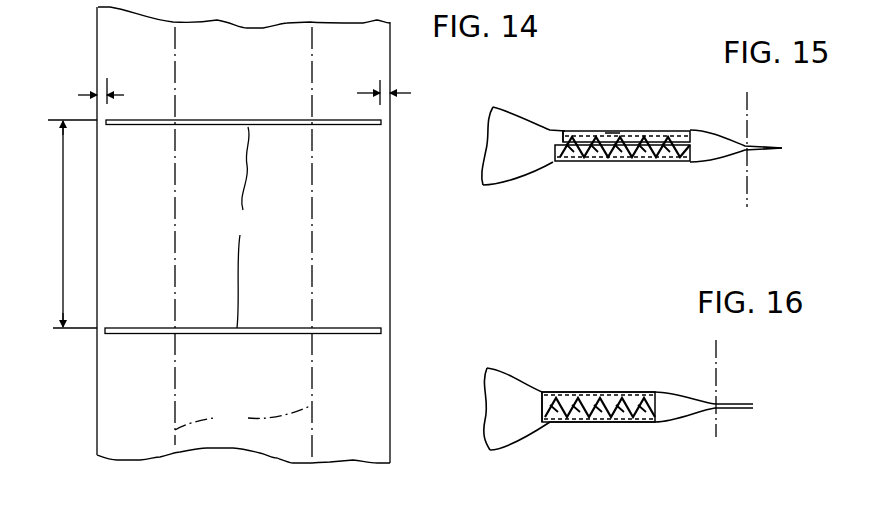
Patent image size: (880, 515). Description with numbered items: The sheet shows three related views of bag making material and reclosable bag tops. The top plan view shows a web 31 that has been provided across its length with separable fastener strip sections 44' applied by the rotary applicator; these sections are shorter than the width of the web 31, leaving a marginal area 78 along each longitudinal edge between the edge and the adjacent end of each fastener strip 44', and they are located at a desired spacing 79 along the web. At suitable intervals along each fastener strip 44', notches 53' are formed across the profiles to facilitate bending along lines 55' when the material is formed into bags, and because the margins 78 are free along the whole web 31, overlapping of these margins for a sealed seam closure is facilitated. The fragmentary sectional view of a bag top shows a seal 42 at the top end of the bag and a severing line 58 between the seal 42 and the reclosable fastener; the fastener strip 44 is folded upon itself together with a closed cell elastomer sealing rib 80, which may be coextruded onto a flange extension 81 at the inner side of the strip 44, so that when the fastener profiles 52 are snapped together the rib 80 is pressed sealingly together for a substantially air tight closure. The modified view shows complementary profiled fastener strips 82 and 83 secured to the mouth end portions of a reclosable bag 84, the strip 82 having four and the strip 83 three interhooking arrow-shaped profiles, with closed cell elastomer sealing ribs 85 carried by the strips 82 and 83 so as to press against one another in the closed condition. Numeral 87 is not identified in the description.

In FIG. 14, the web 31 is at (388, 52).
In FIG. 14, the marginal area 78 is at (100, 97).
In FIG. 14, the spacing 79 is at (63, 226).
In FIG. 14, the notches 53' is at (243, 229).
In FIG. 14, the fastener strip sections 44' is at (249, 227).
In FIG. 14, the bending lines 55' is at (243, 418).
In FIG. 15, the seal 42 is at (760, 148).
In FIG. 15, the fastener strip 44 is at (643, 148).
In FIG. 15, the fastener profiles 52 is at (681, 131).
In FIG. 15, the closed cell elastomer sealing rib 80 is at (582, 131).
In FIG. 15, the flange extension 81 is at (613, 131).
In FIG. 15, the severing line 58 is at (748, 190).
In FIG. 16, the fastener strip 82 is at (655, 392).
In FIG. 16, the fastener strip 83 is at (652, 423).
In FIG. 16, the reclosable bag 84 is at (551, 391).
In FIG. 16, the closed cell elastomer sealing ribs 85 is at (609, 392).
In FIG. 16, the stitch 87 is at (579, 392).